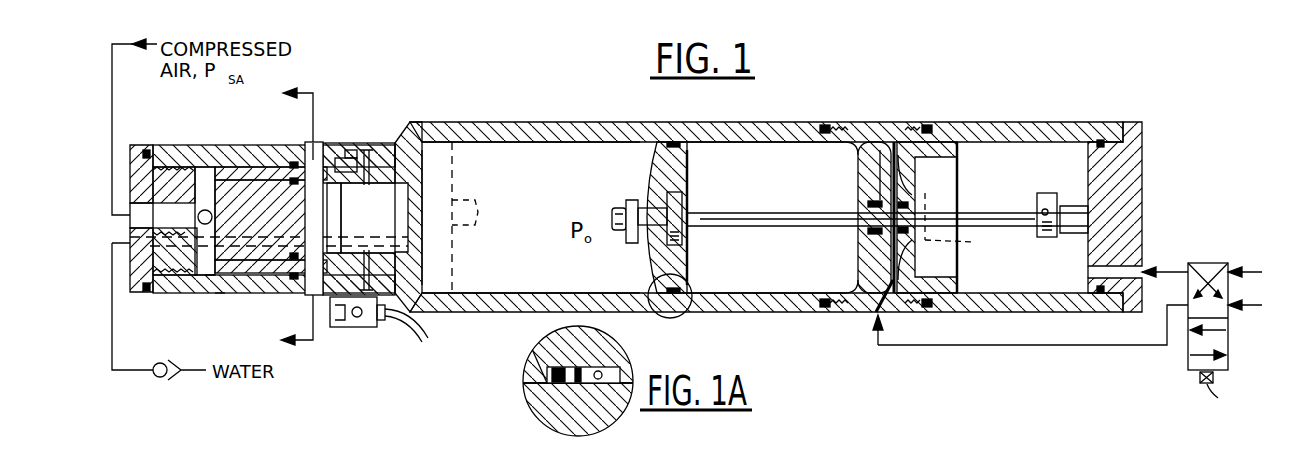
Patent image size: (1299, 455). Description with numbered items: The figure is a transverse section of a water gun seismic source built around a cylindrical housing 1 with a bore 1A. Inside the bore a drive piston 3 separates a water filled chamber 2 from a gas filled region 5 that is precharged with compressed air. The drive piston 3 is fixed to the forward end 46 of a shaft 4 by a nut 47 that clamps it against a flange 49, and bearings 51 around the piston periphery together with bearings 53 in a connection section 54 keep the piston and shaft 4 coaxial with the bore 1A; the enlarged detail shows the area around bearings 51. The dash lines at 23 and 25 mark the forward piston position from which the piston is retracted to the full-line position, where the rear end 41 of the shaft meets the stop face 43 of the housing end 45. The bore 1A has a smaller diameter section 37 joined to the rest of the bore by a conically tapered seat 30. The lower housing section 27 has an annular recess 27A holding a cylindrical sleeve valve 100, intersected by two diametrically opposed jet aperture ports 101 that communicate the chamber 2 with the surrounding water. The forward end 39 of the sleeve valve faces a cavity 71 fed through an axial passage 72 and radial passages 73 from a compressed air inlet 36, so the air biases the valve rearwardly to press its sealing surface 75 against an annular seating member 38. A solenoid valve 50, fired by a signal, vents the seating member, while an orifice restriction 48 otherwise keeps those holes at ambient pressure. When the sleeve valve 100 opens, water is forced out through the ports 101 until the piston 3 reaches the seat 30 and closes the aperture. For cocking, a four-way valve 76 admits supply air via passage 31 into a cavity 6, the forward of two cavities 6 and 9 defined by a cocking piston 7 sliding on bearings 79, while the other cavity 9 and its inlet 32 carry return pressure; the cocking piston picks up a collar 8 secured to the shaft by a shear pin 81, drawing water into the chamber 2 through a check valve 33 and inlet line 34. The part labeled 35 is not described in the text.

In FIG. 1, the cylindrical housing 1 is at (490, 122).
In FIG. 1, the bore 1A is at (557, 150).
In FIG. 1, the water filled chamber 2 is at (463, 152).
In FIG. 1, the drive piston 3 is at (655, 160).
In FIG. 1, the shaft 4 is at (757, 214).
In FIG. 1, the gas filled region 5 is at (778, 142).
In FIG. 1, the cavity 6 is at (893, 145).
In FIG. 1, the cocking piston 7 is at (937, 147).
In FIG. 1, the collar 8 is at (933, 196).
In FIG. 1, the cavity 9 is at (1020, 145).
In FIG. 1, the retracted piston position (dash lines) 23 is at (455, 265).
In FIG. 1, the retracted position (dash lines) 25 is at (964, 250).
In FIG. 1, the lower section of the housing 27 is at (256, 294).
In FIG. 1, the annular recess 27A is at (261, 220).
In FIG. 1, the conically tapered surface 30 is at (410, 172).
In FIG. 1, the passage 31 is at (876, 293).
In FIG. 1, the inlet 32 is at (1128, 264).
In FIG. 1, the check valve 33 is at (156, 378).
In FIG. 1, the inlet line 34 is at (135, 266).
In FIG. 1, the housing lower wall 35 is at (219, 297).
In FIG. 1, the compressed air inlet 36 is at (146, 150).
In FIG. 1, the smaller diameter bore section 37 is at (386, 180).
In FIG. 1, the annular seating member 38 is at (366, 250).
In FIG. 1, the forward end of the sleeve valve 39 is at (211, 294).
In FIG. 1, the rear end of the shaft 41 is at (1088, 214).
In FIG. 1, the face 43 is at (1088, 266).
In FIG. 1, the end of the housing 45 is at (1142, 160).
In FIG. 1, the forward end of the shaft 46 is at (645, 188).
In FIG. 1, the nut 47 is at (630, 240).
In FIG. 1, the orifice restriction 48 is at (338, 330).
In FIG. 1, the flange 49 is at (686, 198).
In FIG. 1, the solenoid valve 50 is at (362, 328).
In FIG. 1, the bearings 51 is at (690, 152).
In FIG. 1A, the bearings 51 is at (547, 390).
In FIG. 1, the bearings 53 is at (874, 200).
In FIG. 1, the connection section 54 is at (855, 135).
In FIG. 1, the cavity 71 is at (208, 208).
In FIG. 1, the axial passage 72 is at (168, 185).
In FIG. 1, the radial passages 73 is at (198, 190).
In FIG. 1, the sealing surface 75 is at (340, 188).
In FIG. 1, the four-way valve 76 is at (1228, 343).
In FIG. 1, the bearings 79 is at (958, 143).
In FIG. 1, the shear pin 81 is at (1036, 216).
In FIG. 1, the cylindrical sleeve valve 100 is at (316, 150).
In FIG. 1, the jet aperture ports 101 is at (307, 148).